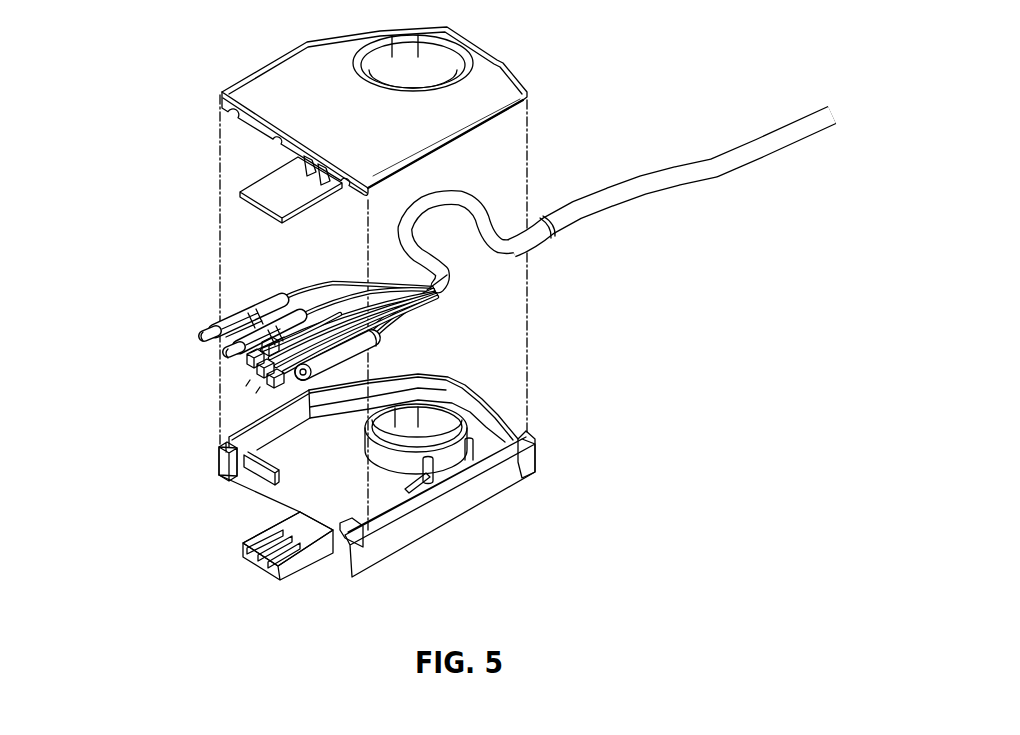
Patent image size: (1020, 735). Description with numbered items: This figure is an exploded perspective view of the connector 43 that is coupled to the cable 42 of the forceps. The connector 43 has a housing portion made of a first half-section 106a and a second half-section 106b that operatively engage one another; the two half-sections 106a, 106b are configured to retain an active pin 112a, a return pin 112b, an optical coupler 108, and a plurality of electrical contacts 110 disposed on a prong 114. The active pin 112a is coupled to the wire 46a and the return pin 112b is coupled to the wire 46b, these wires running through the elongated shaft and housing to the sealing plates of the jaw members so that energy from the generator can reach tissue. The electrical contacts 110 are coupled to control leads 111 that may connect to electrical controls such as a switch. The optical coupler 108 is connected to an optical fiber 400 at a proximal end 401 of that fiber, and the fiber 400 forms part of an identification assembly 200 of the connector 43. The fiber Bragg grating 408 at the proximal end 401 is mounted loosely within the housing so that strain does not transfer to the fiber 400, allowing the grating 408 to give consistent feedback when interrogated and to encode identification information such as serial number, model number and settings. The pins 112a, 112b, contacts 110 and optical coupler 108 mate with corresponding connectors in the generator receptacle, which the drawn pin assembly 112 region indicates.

The connector 43 is at (150, 191).
The first half-section 106a is at (293, 68).
The second half-section 106b is at (462, 502).
The cable 42 is at (693, 177).
The optical fiber 400 is at (427, 295).
The fiber Bragg grating 408 is at (413, 310).
The identification assembly 200 is at (405, 325).
The control leads 111 is at (357, 305).
The wire 46a is at (310, 300).
The wire 46b is at (273, 295).
The active pin 112a is at (227, 352).
The return pin 112b is at (203, 334).
The optical coupler 108 is at (355, 367).
The electrical contacts 110 is at (255, 374).
The proximal end 401 is at (262, 388).
The connector receptacle 112 is at (231, 504).
The prong 114 is at (297, 563).